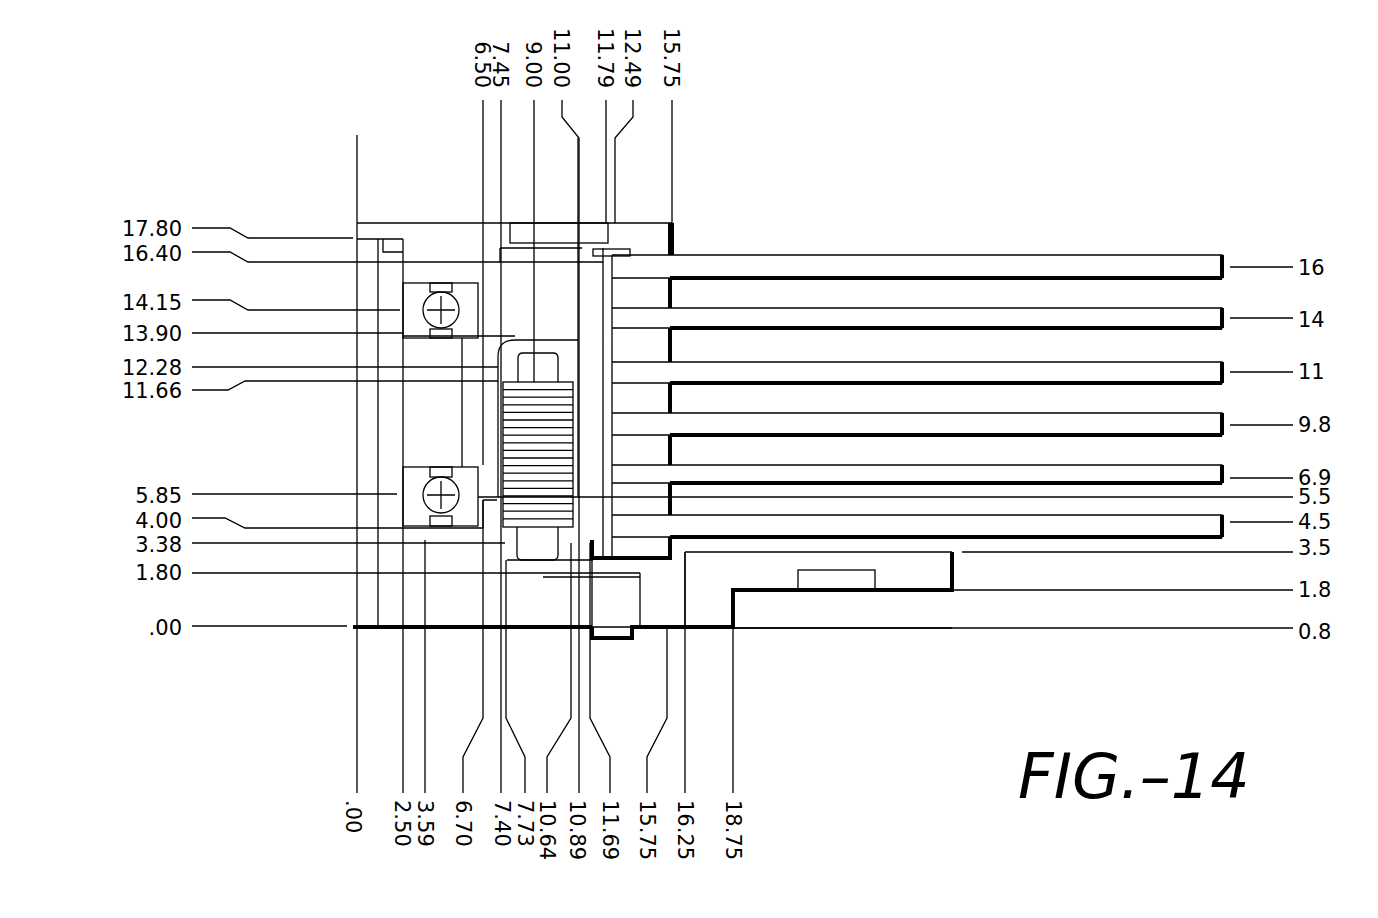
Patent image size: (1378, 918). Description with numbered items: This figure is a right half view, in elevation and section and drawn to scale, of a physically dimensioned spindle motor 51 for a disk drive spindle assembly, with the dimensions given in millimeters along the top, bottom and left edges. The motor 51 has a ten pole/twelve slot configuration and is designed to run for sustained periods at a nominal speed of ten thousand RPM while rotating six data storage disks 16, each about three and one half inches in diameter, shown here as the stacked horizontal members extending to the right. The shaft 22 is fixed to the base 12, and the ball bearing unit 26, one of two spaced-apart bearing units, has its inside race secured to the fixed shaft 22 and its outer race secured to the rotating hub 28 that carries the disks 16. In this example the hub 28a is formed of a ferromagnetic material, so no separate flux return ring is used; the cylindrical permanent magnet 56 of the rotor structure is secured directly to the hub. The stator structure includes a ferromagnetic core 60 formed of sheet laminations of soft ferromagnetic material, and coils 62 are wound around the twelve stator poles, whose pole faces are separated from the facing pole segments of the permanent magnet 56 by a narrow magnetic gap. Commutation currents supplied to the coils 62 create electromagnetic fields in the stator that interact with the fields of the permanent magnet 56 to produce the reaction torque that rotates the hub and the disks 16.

The base 12 is at (768, 578).
The data storage disks 16 is at (880, 265).
The shaft 22 is at (388, 618).
The ball bearing unit 26 is at (468, 292).
The hub 28 is at (412, 472).
The hub 28a is at (597, 298).
The spindle motor 51 is at (240, 724).
The permanent magnet 56 is at (580, 380).
The ferromagnetic core 60 is at (507, 410).
The coils 62 is at (541, 548).